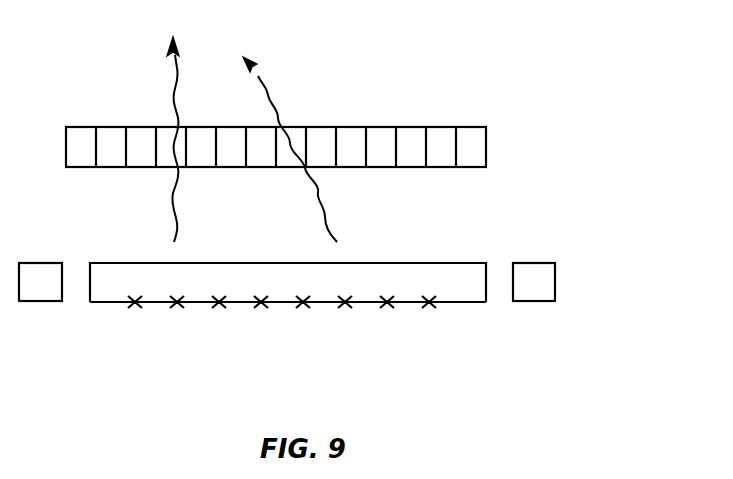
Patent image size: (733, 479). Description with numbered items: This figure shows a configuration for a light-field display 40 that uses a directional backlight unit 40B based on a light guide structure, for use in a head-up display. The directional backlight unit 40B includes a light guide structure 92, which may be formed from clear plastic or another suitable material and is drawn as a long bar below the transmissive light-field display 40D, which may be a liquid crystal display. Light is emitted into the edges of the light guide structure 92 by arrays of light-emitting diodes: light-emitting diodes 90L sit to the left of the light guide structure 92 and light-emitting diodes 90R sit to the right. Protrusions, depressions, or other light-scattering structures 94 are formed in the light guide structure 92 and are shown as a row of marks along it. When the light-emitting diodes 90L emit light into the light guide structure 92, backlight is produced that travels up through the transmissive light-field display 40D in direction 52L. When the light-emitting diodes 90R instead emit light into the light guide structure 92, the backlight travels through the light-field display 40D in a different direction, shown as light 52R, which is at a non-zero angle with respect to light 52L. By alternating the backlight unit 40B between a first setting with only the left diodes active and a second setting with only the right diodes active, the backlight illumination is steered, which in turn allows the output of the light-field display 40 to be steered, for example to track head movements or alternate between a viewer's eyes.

The light-field display 40 is at (647, 105).
The transmissive light-field display 40D is at (497, 145).
The directional backlight unit 40B is at (572, 252).
The light traveling in first direction 52L is at (176, 79).
The light traveling in second direction 52R is at (270, 93).
The light-emitting diodes 90L is at (40, 295).
The light-emitting diodes 90R is at (535, 295).
The light guide structure 92 is at (283, 290).
The light-scattering structures 94 is at (177, 303).